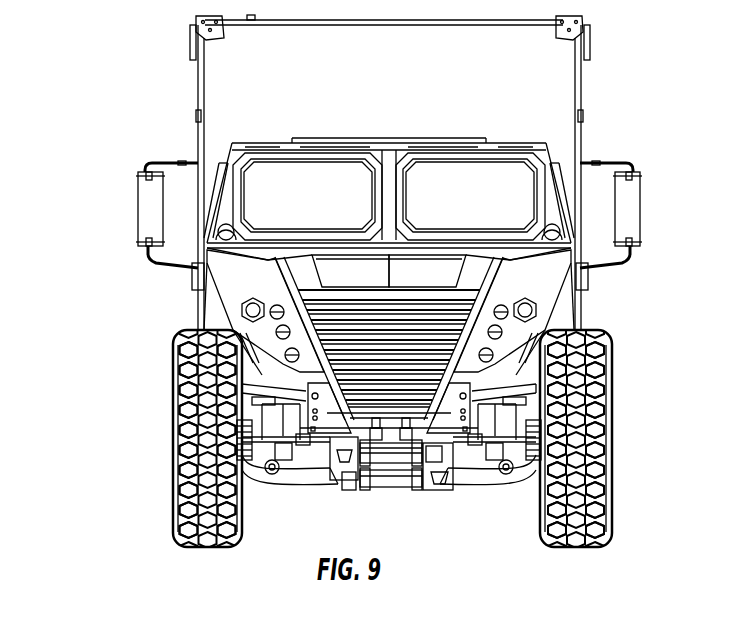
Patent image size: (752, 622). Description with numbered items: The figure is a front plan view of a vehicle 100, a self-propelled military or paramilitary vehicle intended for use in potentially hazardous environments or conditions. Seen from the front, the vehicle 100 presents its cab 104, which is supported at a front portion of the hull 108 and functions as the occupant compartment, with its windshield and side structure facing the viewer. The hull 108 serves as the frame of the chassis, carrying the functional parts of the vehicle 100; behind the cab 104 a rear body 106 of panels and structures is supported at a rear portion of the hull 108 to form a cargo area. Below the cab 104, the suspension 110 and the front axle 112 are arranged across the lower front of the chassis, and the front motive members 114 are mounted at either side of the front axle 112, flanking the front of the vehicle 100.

The vehicle 100 is at (124, 116).
The cab 104 is at (548, 152).
The rear body 106 is at (580, 95).
The hull 108 is at (450, 402).
The suspension 110 is at (485, 466).
The front axle 112 is at (300, 435).
The front motive members 114 is at (614, 404).